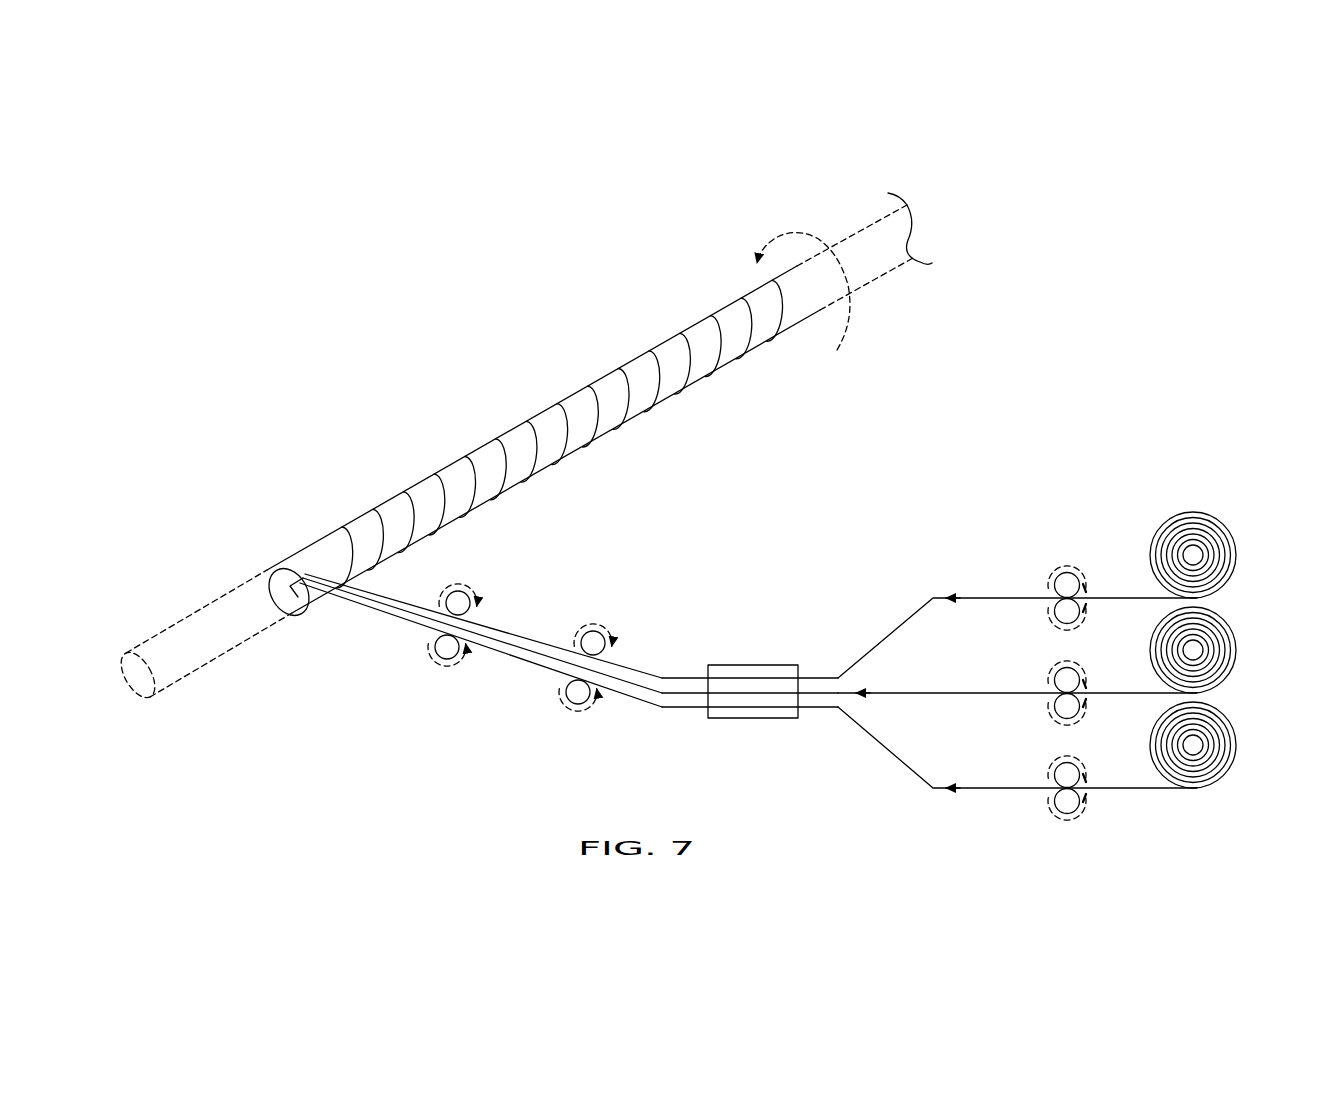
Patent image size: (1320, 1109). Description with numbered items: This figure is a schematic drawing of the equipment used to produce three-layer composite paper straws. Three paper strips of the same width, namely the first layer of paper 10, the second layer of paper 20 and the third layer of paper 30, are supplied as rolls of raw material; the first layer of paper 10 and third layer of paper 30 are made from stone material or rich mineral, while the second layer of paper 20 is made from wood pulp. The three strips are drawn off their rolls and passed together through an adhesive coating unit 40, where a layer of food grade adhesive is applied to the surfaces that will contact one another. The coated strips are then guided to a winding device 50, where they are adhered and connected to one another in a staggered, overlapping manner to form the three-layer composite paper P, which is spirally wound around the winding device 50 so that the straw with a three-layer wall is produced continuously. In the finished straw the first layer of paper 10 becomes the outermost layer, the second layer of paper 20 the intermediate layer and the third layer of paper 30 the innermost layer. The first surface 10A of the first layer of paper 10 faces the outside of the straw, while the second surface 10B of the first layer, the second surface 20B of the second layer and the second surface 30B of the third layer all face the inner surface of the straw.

The first layer of paper 10 is at (1217, 762).
The second layer of paper 20 is at (1212, 637).
The third layer of paper 30 is at (1196, 527).
The adhesive coating unit 40 is at (807, 710).
The winding device 50 is at (185, 677).
The first surface of the first layer of paper 10A is at (352, 537).
The second surface of the first layer of paper 10B is at (290, 610).
The second surface of the second layer of paper 20B is at (298, 590).
The second surface of the third layer of paper 30B is at (308, 577).
The three-layer composite paper P is at (510, 440).